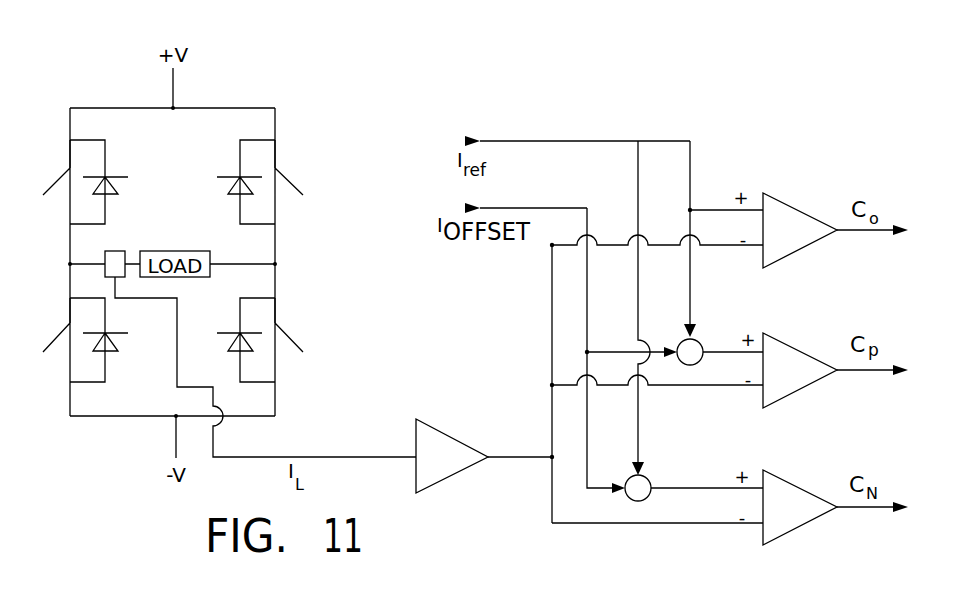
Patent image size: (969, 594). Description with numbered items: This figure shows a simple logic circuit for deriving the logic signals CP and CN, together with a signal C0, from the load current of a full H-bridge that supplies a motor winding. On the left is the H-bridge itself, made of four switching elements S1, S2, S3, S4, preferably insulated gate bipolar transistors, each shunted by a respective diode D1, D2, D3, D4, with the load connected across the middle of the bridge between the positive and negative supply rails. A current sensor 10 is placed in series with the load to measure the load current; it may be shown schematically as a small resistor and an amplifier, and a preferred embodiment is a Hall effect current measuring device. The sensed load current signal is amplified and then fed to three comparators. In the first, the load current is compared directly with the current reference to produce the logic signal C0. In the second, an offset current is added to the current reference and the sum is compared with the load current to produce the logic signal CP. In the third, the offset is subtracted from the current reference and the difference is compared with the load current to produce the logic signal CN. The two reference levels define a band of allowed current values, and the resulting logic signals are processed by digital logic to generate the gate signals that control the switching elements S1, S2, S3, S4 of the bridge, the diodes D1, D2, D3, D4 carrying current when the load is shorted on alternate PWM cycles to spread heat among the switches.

The current sensor 10 is at (125, 242).
The switching element S1 is at (51, 168).
The switching element S2 is at (297, 326).
The switching element S3 is at (297, 168).
The switching element S4 is at (51, 326).
The diode D1 is at (112, 182).
The diode D2 is at (236, 340).
The diode D3 is at (242, 182).
The diode D4 is at (111, 340).